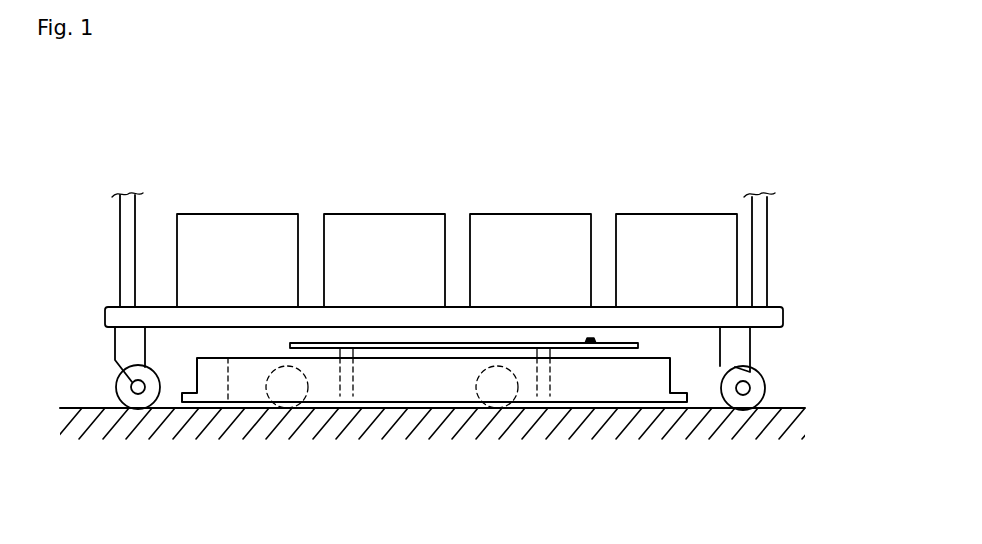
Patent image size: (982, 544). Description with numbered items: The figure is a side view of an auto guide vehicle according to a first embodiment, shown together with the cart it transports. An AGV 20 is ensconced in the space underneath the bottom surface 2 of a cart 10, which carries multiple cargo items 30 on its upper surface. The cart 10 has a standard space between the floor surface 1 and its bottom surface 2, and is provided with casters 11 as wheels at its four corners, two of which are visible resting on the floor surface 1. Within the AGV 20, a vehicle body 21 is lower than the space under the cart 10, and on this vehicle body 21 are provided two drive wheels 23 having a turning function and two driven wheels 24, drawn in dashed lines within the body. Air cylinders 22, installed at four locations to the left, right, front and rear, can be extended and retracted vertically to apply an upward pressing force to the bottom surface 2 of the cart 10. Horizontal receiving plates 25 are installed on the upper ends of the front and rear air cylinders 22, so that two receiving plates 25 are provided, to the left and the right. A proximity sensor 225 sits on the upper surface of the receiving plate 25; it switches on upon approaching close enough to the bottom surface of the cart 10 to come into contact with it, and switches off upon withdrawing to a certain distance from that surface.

The floor surface 1 is at (82, 407).
The bottom surface 2 is at (203, 328).
The cart 10 is at (788, 274).
The casters 11 is at (125, 350).
The AGV 20 is at (674, 388).
The vehicle body 21 is at (647, 374).
The air cylinders 22 is at (340, 402).
The drive wheels 23 is at (284, 408).
The driven wheels 24 is at (496, 408).
The receiving plates 25 is at (288, 345).
The proximity sensor 225 is at (597, 337).
The cargo items 30 is at (234, 228).